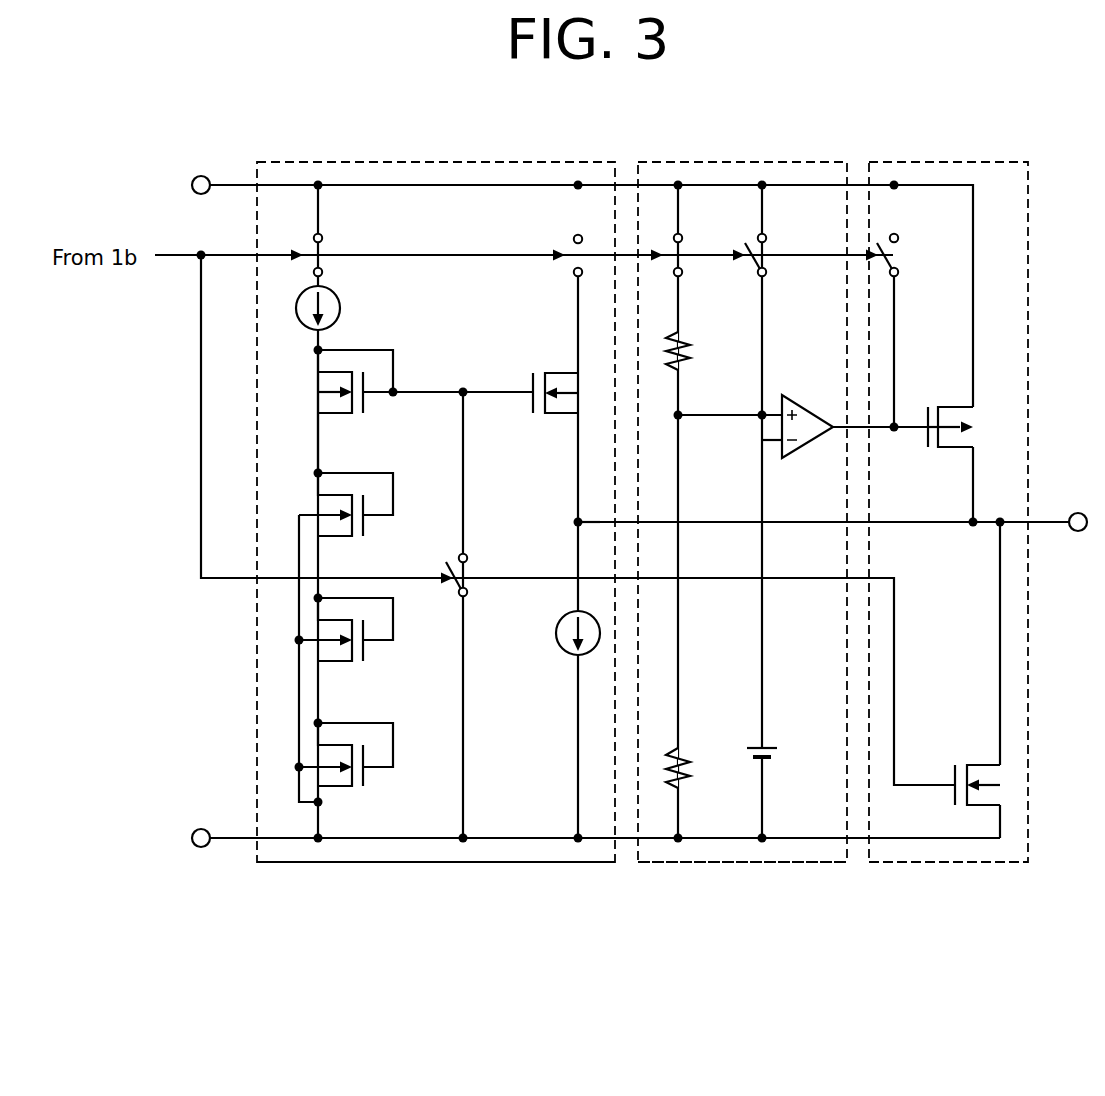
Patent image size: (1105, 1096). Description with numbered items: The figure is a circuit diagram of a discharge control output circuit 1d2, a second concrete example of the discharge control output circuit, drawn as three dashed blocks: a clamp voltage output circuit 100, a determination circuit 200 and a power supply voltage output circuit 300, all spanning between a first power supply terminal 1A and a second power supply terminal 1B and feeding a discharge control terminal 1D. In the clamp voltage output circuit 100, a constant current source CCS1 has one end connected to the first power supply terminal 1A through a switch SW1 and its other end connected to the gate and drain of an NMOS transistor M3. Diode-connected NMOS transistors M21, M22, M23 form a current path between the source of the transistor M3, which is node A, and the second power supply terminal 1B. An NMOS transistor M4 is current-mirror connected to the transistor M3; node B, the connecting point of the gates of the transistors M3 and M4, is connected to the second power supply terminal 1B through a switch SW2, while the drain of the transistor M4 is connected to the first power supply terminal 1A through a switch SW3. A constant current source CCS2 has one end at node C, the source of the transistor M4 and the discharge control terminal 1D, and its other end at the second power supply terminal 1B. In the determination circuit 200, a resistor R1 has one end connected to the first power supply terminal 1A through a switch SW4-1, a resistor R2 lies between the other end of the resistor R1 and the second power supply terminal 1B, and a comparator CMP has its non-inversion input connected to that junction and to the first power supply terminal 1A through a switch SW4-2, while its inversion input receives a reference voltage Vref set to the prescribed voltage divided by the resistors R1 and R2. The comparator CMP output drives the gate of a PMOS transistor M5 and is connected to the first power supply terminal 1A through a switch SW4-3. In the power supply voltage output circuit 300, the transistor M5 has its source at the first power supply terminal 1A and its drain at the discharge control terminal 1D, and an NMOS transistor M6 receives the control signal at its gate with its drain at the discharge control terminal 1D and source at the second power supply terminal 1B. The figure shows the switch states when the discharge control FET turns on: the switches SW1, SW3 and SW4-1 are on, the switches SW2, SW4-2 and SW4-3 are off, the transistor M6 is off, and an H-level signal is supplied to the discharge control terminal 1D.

The discharge control output circuit 1d2 is at (1003, 103).
The first power supply terminal 1A is at (194, 178).
The second power supply terminal 1B is at (194, 830).
The discharge control terminal 1D is at (1078, 513).
The switch SW1 is at (324, 236).
The switch SW2 is at (468, 557).
The switch SW3 is at (572, 236).
The switch SW4-1 is at (682, 276).
The switch SW4-2 is at (766, 276).
The switch SW4-3 is at (898, 276).
The constant current source CCS1 is at (342, 308).
The constant current source CCS2 is at (563, 651).
The NMOS transistor M3 is at (366, 405).
The NMOS transistor M4 is at (556, 371).
The PMOS transistor M5 is at (950, 405).
The NMOS transistor M6 is at (982, 764).
The NMOS transistor M21 is at (366, 780).
The NMOS transistor M22 is at (366, 655).
The NMOS transistor M23 is at (366, 528).
The node A is at (314, 470).
The node B is at (463, 388).
The node C is at (574, 518).
The resistor R1 is at (686, 366).
The resistor R2 is at (686, 752).
The comparator CMP is at (815, 408).
The reference voltage Vref is at (770, 746).
The clamp voltage output circuit 100 is at (435, 862).
The determination circuit 200 is at (710, 862).
The power supply voltage output circuit 300 is at (968, 862).